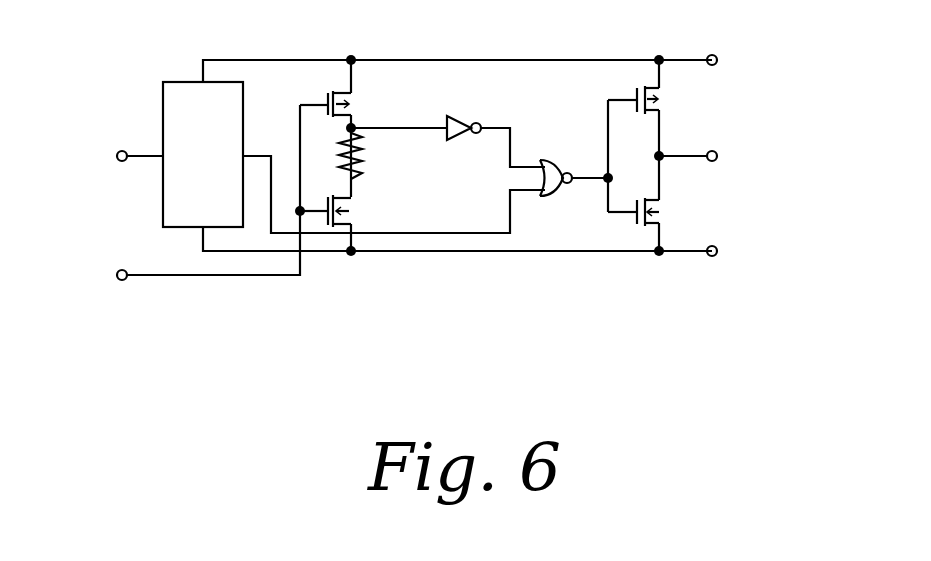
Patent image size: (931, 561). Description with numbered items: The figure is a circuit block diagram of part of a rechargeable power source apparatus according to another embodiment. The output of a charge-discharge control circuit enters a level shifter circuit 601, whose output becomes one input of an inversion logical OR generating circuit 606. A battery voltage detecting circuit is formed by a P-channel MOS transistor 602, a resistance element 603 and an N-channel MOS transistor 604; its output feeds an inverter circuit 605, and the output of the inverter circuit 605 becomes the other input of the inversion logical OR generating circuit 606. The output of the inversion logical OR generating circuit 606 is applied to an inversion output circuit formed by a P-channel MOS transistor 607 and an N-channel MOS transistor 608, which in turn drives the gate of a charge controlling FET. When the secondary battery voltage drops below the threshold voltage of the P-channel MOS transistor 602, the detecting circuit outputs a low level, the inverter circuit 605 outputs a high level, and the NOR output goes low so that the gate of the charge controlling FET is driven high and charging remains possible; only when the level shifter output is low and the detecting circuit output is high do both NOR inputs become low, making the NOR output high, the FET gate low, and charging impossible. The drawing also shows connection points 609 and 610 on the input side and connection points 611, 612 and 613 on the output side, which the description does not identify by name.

The level shifter circuit 601 is at (168, 213).
The P-channel MOS transistor 602 is at (403, 100).
The resistance element 603 is at (403, 158).
The N-channel MOS transistor 604 is at (403, 207).
The inverter circuit 605 is at (490, 100).
The inversion logical OR generating circuit 606 is at (575, 140).
The P-channel MOS transistor 607 is at (705, 103).
The N-channel MOS transistor 608 is at (705, 210).
The input terminal 609 is at (117, 153).
The input terminal 610 is at (113, 270).
The power supply terminal 611 is at (720, 55).
The ground terminal 612 is at (720, 246).
The output terminal 613 is at (720, 151).